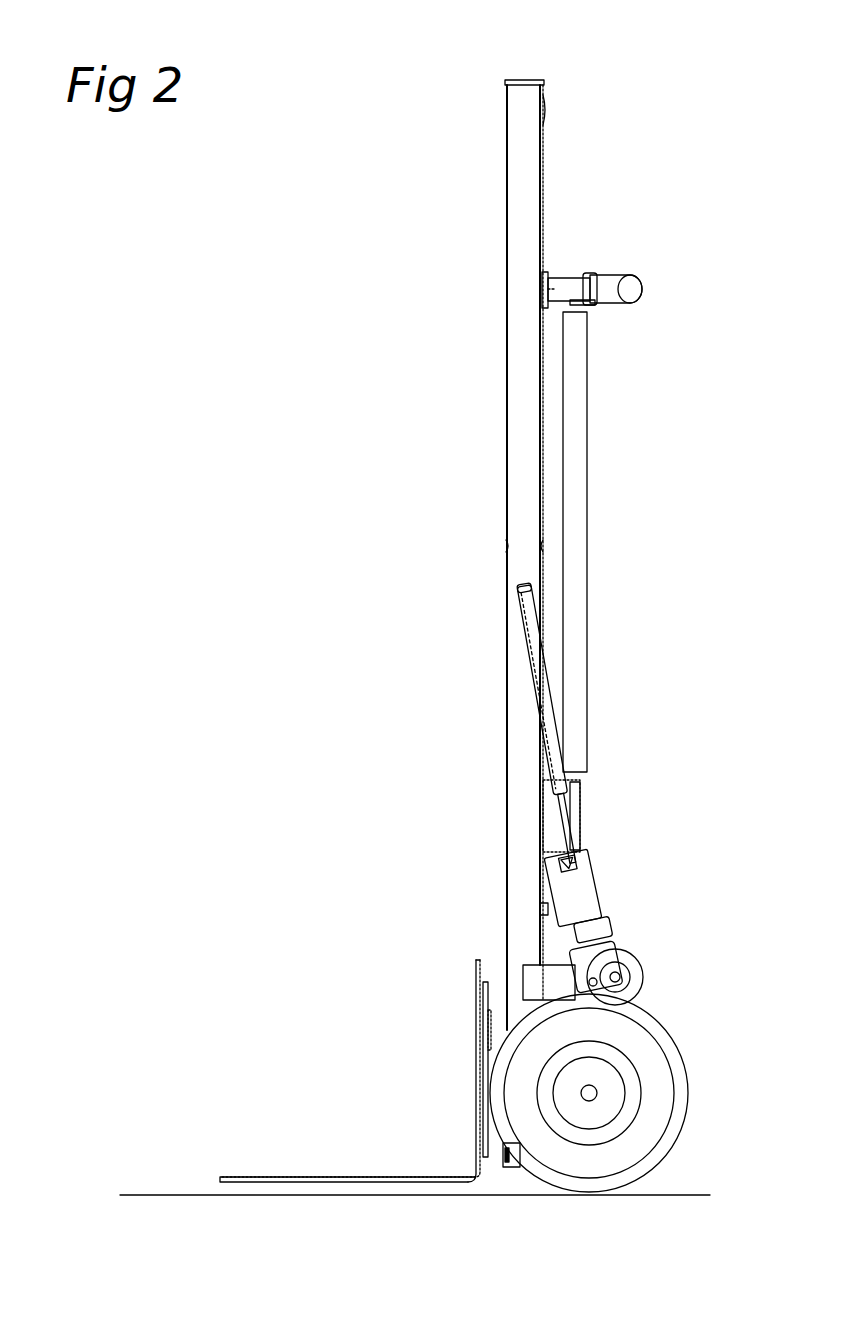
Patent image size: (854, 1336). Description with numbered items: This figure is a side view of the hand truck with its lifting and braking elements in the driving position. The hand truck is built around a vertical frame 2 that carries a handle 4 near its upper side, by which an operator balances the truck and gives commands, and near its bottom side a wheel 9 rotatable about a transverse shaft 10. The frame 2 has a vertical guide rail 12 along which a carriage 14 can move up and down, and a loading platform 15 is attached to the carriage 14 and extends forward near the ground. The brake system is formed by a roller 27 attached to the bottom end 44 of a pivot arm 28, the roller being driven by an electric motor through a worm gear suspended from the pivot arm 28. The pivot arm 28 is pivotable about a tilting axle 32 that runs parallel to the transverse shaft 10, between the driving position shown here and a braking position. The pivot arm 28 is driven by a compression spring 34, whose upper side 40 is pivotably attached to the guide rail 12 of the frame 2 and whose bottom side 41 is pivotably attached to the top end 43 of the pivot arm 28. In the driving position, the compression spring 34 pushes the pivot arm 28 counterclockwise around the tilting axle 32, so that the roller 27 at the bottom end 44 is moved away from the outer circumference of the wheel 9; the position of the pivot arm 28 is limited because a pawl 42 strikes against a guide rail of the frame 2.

The vertical frame 2 is at (527, 80).
The handle 4 is at (566, 283).
The wheel 9 is at (682, 1093).
The transverse shaft 10 is at (593, 1093).
The vertical guide rail 12 is at (523, 493).
The carriage 14 is at (497, 1010).
The loading platform 15 is at (350, 1177).
The roller 27 is at (630, 977).
The pivot arm 28 is at (590, 910).
The tilting axle 32 is at (593, 982).
The compression spring 34 is at (540, 680).
The upper side of the compression spring 40 is at (520, 586).
The bottom side of the compression spring 41 is at (590, 868).
The pawl 42 is at (545, 912).
The top end of the pivot arm 43 is at (580, 848).
The bottom end of the pivot arm 44 is at (545, 975).